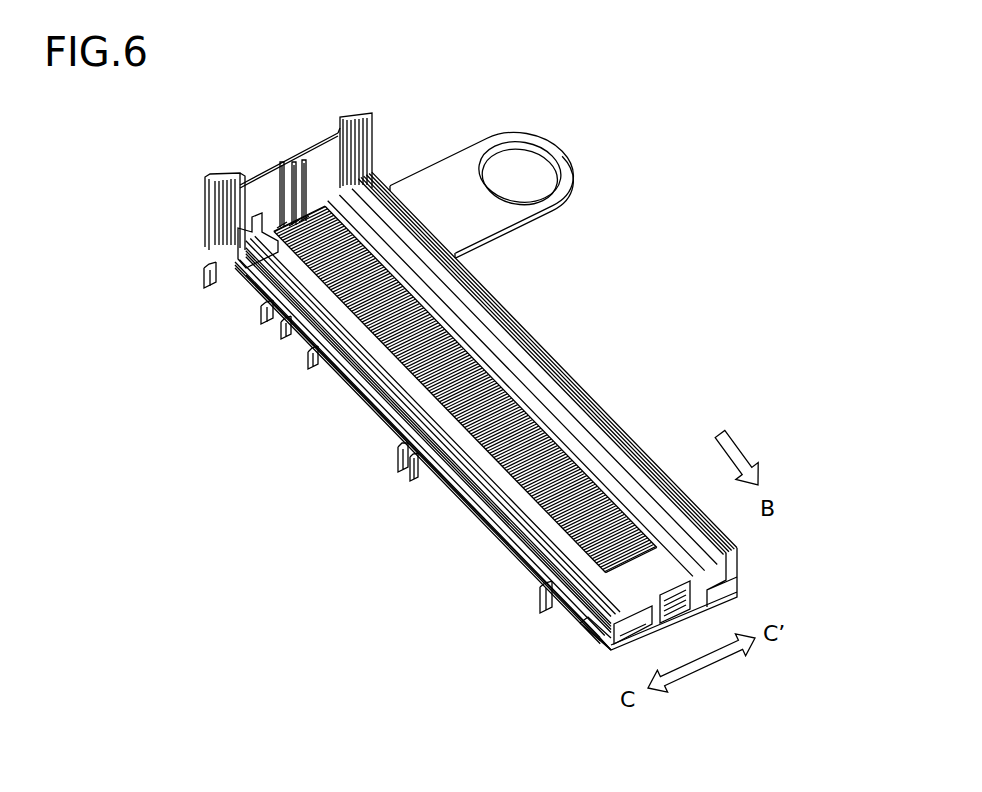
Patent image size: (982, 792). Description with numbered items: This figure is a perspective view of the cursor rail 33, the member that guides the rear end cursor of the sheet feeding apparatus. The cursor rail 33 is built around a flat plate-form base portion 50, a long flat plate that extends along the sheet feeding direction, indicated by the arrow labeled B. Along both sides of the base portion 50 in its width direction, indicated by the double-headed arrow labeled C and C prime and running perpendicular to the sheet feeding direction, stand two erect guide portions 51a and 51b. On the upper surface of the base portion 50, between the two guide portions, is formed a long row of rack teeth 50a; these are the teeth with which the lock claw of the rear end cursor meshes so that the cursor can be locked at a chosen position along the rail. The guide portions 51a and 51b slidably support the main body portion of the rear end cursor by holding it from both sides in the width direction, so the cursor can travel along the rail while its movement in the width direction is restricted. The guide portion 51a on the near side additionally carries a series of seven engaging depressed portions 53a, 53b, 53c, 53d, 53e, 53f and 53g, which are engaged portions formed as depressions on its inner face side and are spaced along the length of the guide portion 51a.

The cursor rail 33 is at (603, 248).
The base portion 50 is at (713, 557).
The rack teeth 50a is at (517, 427).
The guide portion 51a is at (460, 517).
The guide portion 51b is at (613, 420).
The engaging depressed portion 53a is at (226, 284).
The engaging depressed portion 53b is at (261, 306).
The engaging depressed portion 53c is at (282, 330).
The engaging depressed portion 53d is at (306, 356).
The engaging depressed portion 53e is at (398, 467).
The engaging depressed portion 53f is at (410, 480).
The engaging depressed portion 53g is at (545, 605).